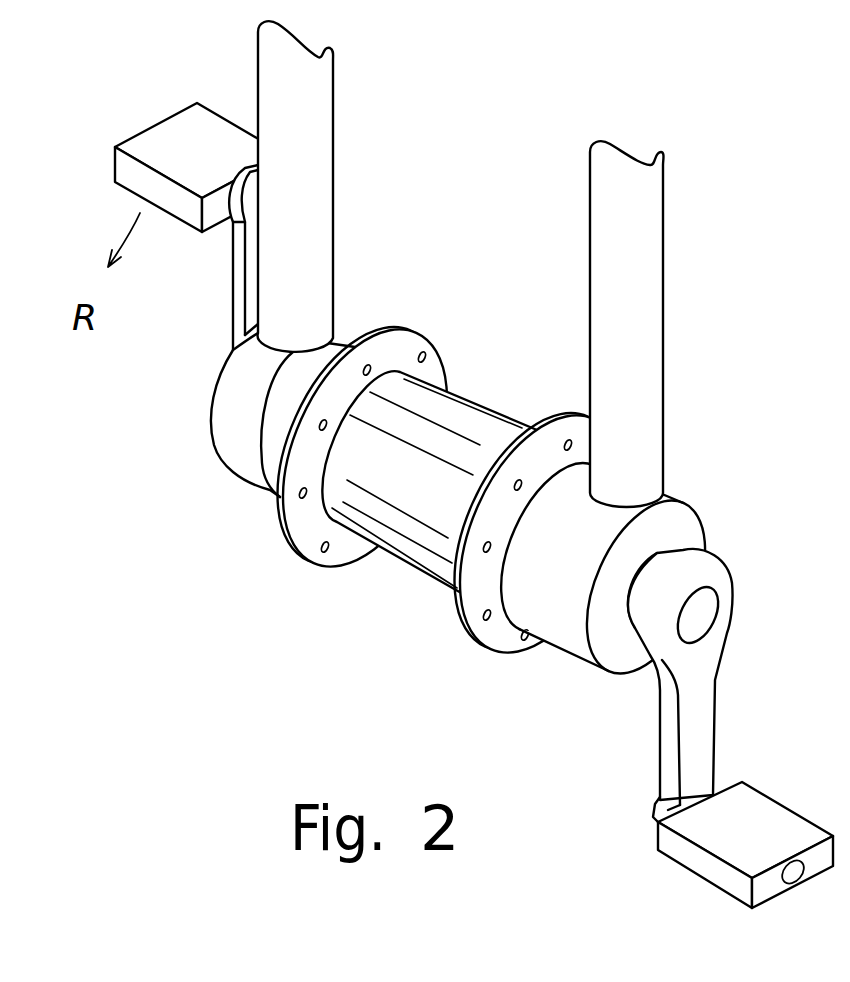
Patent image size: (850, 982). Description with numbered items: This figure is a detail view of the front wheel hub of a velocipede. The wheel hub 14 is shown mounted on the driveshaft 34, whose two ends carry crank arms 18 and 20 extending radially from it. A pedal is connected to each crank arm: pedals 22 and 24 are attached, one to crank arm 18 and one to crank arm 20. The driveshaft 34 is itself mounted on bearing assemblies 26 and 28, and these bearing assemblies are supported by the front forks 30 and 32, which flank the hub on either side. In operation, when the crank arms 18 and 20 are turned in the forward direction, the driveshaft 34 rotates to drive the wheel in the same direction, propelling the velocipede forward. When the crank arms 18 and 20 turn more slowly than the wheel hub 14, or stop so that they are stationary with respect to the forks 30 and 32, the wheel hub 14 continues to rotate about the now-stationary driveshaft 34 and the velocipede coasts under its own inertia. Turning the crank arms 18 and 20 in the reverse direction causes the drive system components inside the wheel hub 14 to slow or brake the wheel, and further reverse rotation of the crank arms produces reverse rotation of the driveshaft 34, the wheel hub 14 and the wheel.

The wheel hub 14 is at (480, 412).
The crank arm 18 is at (698, 680).
The crank arm 20 is at (232, 280).
The pedal 22 is at (735, 802).
The pedal 24 is at (195, 117).
The bearing assembly 26 is at (555, 627).
The bearing assembly 28 is at (232, 455).
The front fork 30 is at (647, 312).
The front fork 32 is at (318, 117).
The driveshaft 34 is at (703, 600).